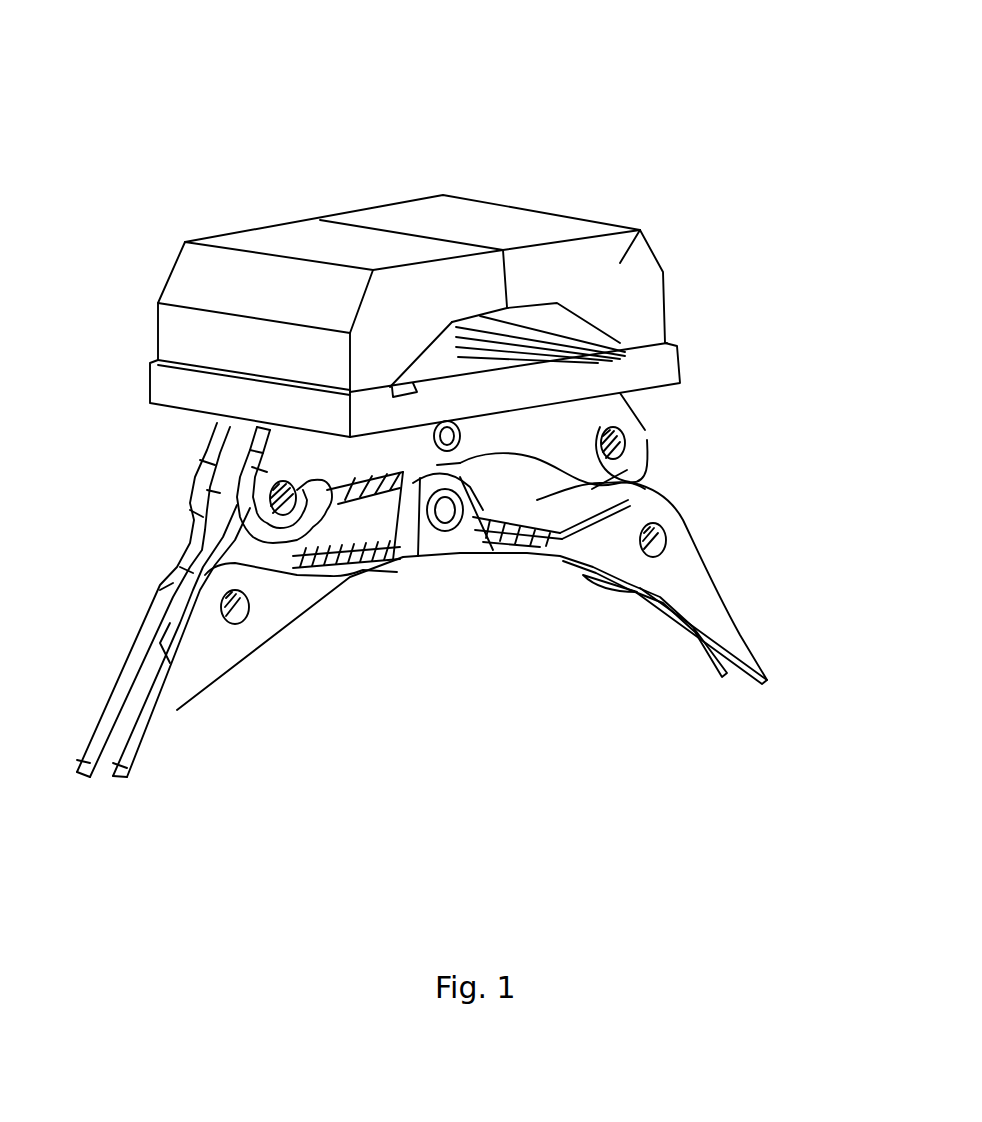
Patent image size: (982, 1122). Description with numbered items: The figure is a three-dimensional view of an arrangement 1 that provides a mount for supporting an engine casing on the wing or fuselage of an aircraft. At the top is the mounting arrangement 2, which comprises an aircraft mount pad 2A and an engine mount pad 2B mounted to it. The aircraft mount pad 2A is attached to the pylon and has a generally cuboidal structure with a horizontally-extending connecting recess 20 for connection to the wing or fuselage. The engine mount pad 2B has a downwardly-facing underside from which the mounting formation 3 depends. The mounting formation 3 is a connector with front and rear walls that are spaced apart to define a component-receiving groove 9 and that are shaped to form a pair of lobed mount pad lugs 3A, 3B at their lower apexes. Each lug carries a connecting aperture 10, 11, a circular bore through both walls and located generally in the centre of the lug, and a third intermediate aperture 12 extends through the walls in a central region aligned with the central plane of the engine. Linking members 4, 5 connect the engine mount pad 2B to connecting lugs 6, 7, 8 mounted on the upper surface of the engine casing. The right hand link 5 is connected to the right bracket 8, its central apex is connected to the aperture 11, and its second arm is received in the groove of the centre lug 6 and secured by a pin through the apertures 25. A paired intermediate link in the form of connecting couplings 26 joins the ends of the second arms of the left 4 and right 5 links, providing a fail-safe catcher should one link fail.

The arrangement 1 is at (740, 270).
The mounting arrangement 2 is at (660, 174).
The aircraft mount pad 2A is at (640, 230).
The engine mount pad 2B is at (678, 352).
The mounting formation 3 is at (405, 445).
The mount pad lug 3A is at (633, 450).
The mount pad lug 3B is at (300, 463).
The linking member 4 is at (197, 518).
The linking member 5 is at (647, 497).
The connecting lug 6 is at (481, 535).
The connecting lug 7 is at (175, 700).
The connecting lug 8 is at (710, 607).
The component-receiving groove 9 is at (126, 430).
The connecting aperture 10 is at (320, 478).
The connecting aperture 11 is at (628, 436).
The intermediate aperture 12 is at (452, 420).
The connecting recess 20 is at (522, 323).
The aperture 25 is at (457, 533).
The connecting coupling 26 is at (417, 490).